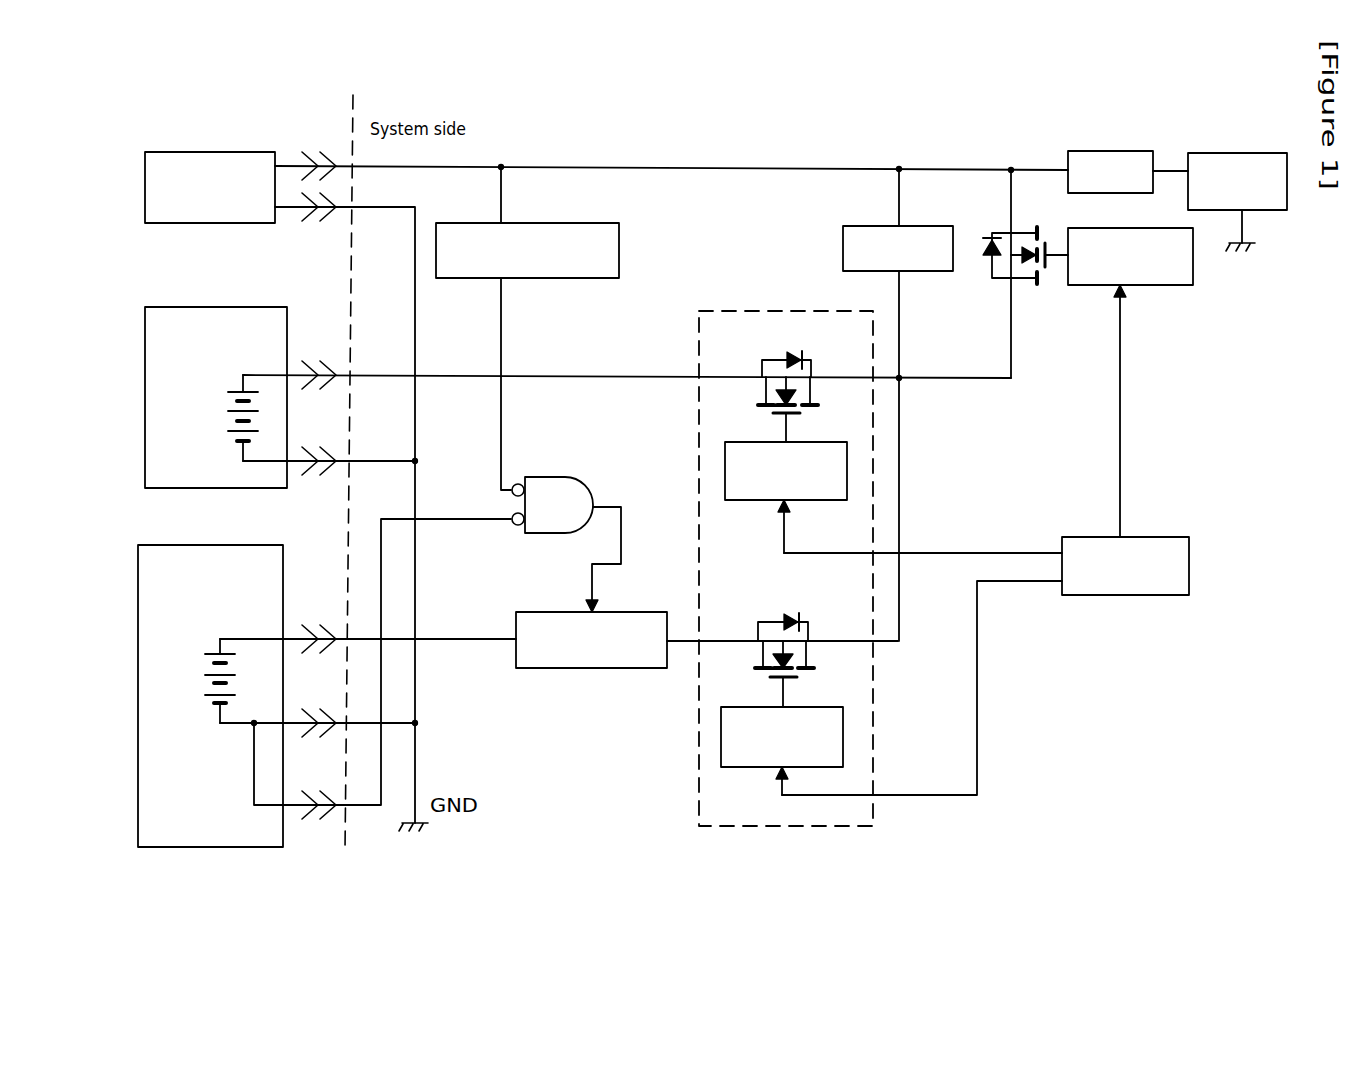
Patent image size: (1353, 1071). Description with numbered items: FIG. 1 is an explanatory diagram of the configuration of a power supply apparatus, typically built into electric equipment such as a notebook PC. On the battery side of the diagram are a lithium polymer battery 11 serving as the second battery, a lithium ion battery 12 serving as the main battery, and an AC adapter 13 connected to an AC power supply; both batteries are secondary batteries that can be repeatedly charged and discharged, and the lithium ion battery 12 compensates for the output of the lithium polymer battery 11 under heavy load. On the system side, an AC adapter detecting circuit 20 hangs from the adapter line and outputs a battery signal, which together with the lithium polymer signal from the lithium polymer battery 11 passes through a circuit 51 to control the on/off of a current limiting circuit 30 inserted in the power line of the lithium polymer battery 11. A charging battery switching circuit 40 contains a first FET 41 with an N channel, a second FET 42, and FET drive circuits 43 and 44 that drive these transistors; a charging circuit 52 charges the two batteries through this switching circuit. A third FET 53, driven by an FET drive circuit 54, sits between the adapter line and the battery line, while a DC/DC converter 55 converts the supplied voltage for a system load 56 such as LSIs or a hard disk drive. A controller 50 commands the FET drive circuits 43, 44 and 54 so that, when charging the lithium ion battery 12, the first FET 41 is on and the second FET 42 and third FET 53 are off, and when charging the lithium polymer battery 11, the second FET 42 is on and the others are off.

The lithium polymer battery 11 is at (258, 545).
The lithium ion battery 12 is at (253, 307).
The AC adapter 13 is at (206, 152).
The AC adapter detecting circuit 20 is at (619, 255).
The current limiting circuit 30 is at (578, 668).
The charging battery switching circuit 40 is at (699, 327).
The first FET 41 is at (746, 399).
The second FET 42 is at (828, 656).
The FET drive circuit 43 is at (753, 500).
The FET drive circuit 44 is at (843, 735).
The controller 50 is at (1120, 595).
The circuit 51 is at (567, 477).
The charging circuit 52 is at (843, 250).
The third FET 53 is at (1040, 297).
The FET drive circuit 54 is at (1158, 285).
The DC/DC converter 55 is at (1078, 151).
The system load 56 is at (1208, 153).